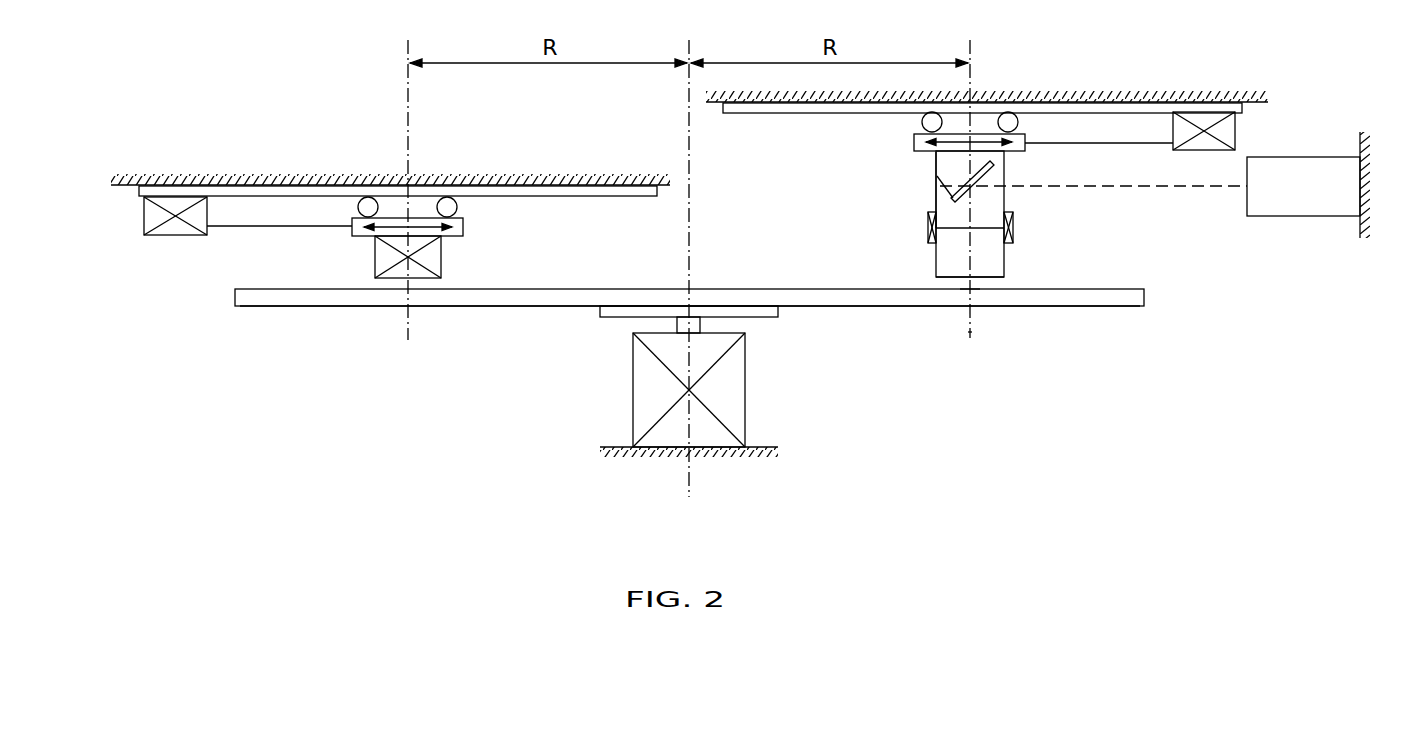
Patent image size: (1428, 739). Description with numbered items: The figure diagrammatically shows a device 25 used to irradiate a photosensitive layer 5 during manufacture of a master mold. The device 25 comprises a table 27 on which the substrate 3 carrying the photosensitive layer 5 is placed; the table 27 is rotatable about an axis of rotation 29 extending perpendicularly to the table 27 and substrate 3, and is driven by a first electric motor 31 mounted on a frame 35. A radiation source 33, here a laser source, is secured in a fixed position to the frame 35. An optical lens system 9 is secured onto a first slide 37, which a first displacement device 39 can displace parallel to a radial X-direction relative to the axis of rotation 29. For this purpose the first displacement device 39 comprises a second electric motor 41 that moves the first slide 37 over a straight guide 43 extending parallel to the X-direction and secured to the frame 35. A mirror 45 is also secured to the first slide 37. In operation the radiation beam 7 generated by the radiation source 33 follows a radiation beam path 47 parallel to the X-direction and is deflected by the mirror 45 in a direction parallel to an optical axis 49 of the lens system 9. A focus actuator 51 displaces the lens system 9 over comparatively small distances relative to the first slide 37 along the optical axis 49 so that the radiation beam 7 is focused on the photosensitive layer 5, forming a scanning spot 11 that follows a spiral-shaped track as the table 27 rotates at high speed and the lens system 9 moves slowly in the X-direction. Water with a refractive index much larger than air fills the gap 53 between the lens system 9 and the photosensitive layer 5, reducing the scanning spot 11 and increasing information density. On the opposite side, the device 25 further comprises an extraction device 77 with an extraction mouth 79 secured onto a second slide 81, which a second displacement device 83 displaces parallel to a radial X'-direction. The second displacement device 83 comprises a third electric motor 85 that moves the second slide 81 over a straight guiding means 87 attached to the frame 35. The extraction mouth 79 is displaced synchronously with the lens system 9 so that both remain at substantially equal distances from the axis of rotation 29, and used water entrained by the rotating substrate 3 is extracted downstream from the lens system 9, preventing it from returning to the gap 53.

The substrate 3 is at (818, 306).
The photosensitive layer 5 is at (806, 289).
The radiation beam 7 is at (965, 248).
The optical lens system 9 is at (995, 256).
The scanning spot 11 is at (957, 284).
The device 25 is at (178, 442).
The table 27 is at (612, 320).
The axis of rotation 29 is at (692, 236).
The first electric motor 31 is at (633, 415).
The radiation source 33 is at (1318, 168).
The frame 35 is at (276, 183).
The first slide 37 is at (914, 147).
The first displacement device 39 is at (1050, 191).
The second electric motor 41 is at (1207, 118).
The straight guide 43 is at (1053, 105).
The mirror 45 is at (990, 172).
The radiation beam path 47 is at (1090, 190).
The optical axis 49 is at (972, 332).
The focus actuator 51 is at (928, 228).
The gap 53 is at (982, 285).
The extraction device 77 is at (365, 148).
The extraction mouth 79 is at (440, 256).
The second slide 81 is at (463, 224).
The second displacement device 83 is at (308, 250).
The third electric motor 85 is at (144, 214).
The straight guiding means 87 is at (580, 192).